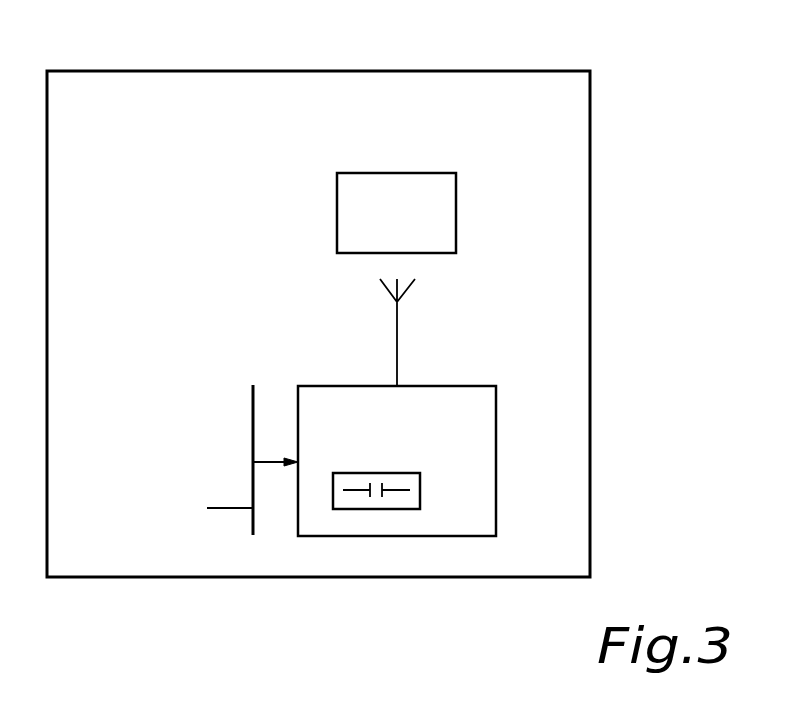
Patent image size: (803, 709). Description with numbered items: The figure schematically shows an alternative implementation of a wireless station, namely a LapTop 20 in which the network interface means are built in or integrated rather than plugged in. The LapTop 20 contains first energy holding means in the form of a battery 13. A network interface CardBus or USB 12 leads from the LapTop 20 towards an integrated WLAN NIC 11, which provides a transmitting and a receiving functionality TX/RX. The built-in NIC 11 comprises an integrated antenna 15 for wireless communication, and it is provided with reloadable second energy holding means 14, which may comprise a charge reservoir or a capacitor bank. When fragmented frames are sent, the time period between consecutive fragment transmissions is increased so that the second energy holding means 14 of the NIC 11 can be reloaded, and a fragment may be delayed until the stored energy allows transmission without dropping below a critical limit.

The LapTop 20 is at (335, 71).
The battery 13 is at (335, 212).
The WLAN NIC 11 is at (455, 386).
The integrated antenna 15 is at (397, 338).
The network interface CardBus or USB 12 is at (252, 410).
The reloadable second energy holding means 14 is at (393, 473).